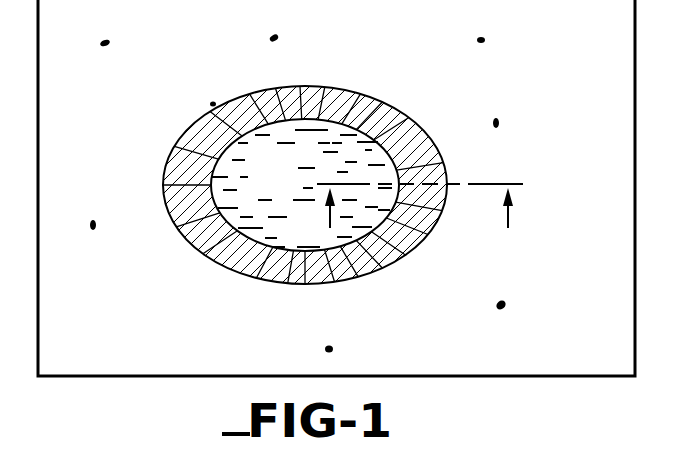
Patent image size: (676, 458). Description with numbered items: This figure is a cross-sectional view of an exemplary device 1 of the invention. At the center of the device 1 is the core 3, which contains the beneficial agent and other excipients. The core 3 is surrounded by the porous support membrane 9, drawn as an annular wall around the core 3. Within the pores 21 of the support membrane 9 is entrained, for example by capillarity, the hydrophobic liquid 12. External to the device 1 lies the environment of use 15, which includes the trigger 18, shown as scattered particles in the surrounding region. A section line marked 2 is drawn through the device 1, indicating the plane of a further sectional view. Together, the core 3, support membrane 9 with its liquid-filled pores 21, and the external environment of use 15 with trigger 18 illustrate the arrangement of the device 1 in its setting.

The device 1 is at (190, 267).
The section line 2- 2 is at (412, 215).
The core 3 is at (253, 186).
The porous support membrane 9 is at (168, 160).
The hydrophobic liquid 12 is at (326, 87).
The environment of use 15 is at (589, 118).
The trigger 18 is at (212, 103).
The pores 21 is at (342, 88).